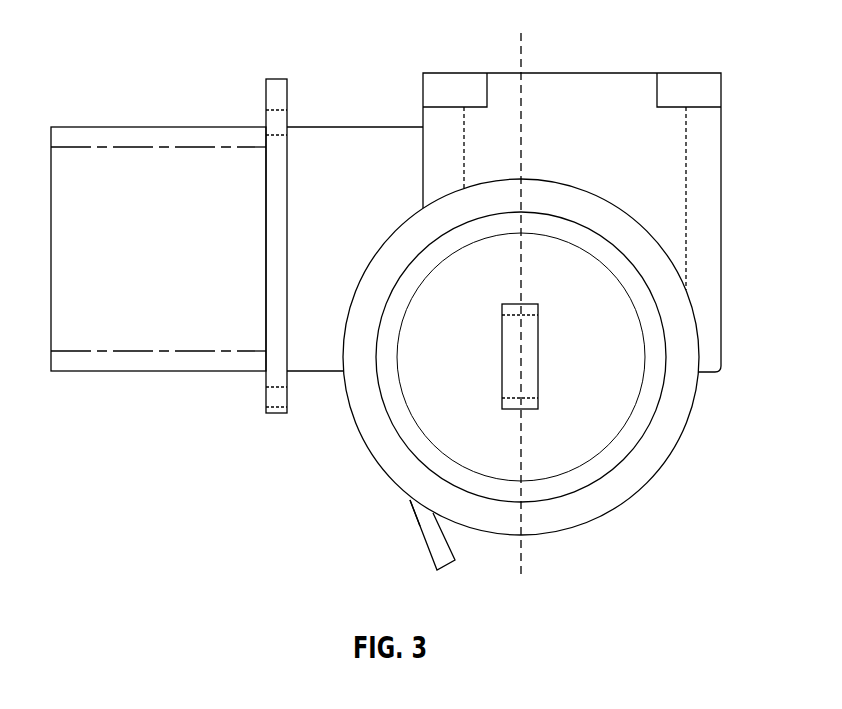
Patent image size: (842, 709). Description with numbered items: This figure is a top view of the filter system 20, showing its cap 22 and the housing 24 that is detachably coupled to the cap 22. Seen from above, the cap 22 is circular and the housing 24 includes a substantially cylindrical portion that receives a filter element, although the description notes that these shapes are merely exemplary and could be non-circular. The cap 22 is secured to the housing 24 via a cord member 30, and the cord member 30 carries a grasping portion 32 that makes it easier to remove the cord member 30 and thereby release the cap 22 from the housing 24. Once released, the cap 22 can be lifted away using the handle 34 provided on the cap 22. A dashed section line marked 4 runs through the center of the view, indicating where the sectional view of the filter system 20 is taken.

The filter system 20 is at (99, 53).
The cap 22 is at (663, 362).
The housing 24 is at (721, 230).
The cord member 30 is at (413, 532).
The grasping portion 32 is at (427, 545).
The handle 34 is at (526, 360).
The section line 4- 4 is at (477, 578).